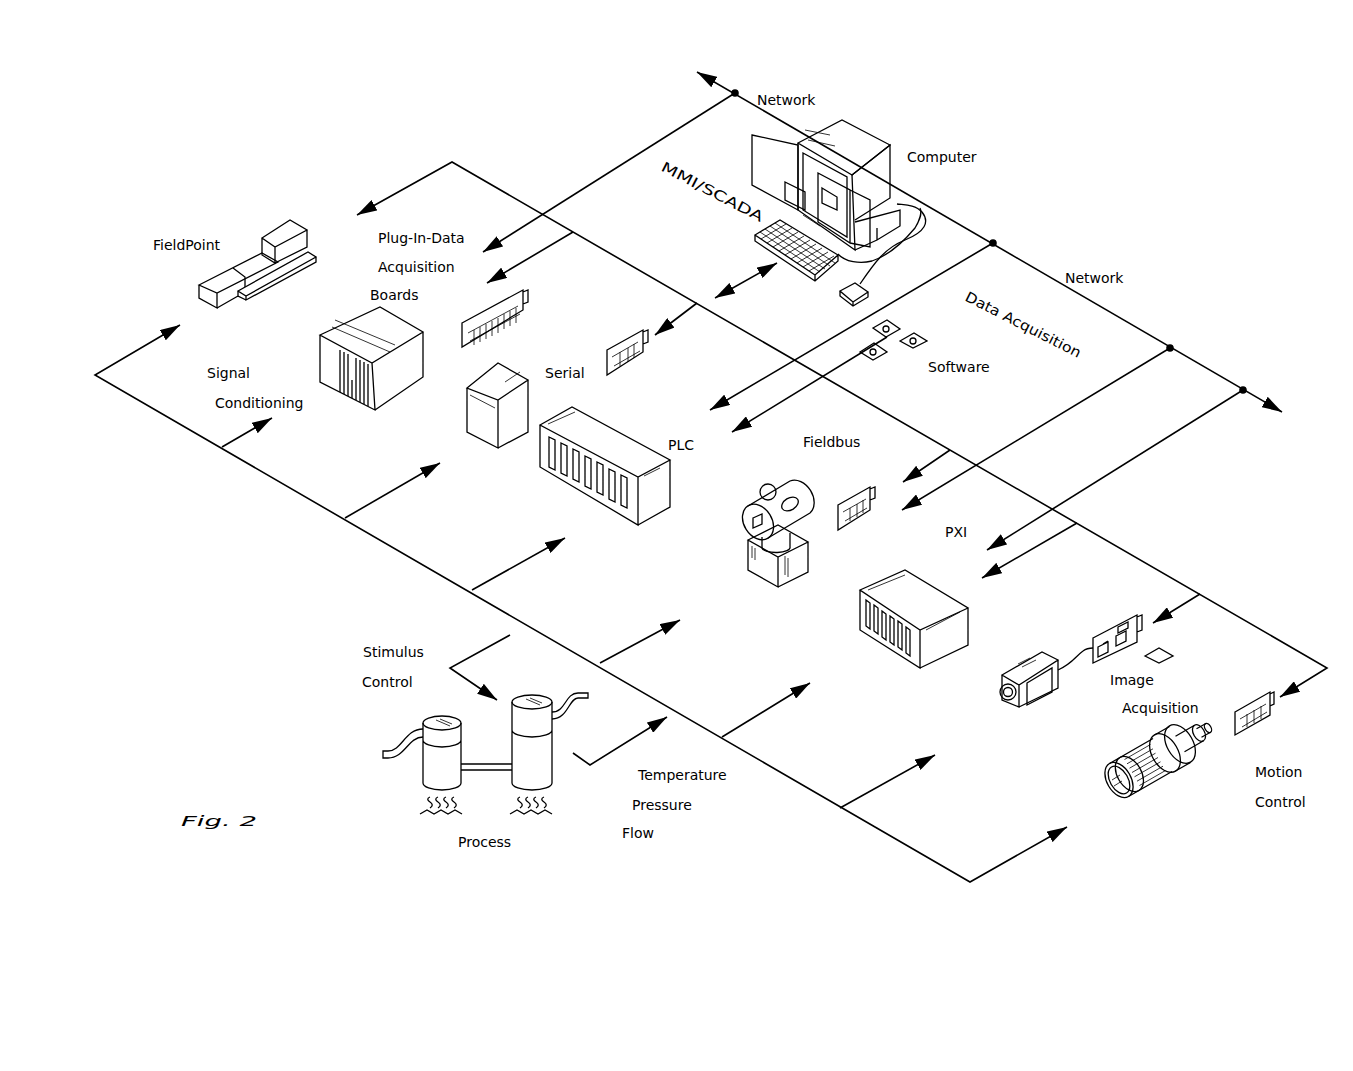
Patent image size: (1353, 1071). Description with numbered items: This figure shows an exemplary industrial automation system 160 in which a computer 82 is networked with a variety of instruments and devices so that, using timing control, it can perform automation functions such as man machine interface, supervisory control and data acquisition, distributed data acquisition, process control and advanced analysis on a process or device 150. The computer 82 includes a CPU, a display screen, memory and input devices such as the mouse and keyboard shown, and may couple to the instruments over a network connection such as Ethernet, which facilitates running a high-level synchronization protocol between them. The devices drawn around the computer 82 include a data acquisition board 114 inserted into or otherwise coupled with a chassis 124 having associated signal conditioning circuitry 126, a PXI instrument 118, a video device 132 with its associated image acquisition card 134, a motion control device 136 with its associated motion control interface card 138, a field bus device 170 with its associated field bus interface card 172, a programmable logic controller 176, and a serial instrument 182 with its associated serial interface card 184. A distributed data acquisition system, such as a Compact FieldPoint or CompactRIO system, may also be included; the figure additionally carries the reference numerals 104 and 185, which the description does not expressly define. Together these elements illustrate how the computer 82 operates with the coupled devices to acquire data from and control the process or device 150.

The industrial automation system 160 is at (1115, 131).
The computer 82 is at (862, 137).
The software 104 is at (892, 340).
The data acquisition board 114 is at (529, 289).
The serial interface card 184 is at (620, 343).
The FieldPoint distributed I/O system 185 is at (270, 228).
The chassis 124 is at (356, 366).
The signal conditioning circuitry 126 is at (345, 392).
The serial instrument 182 is at (473, 423).
The PLC (Programmable Logic Controller) 176 is at (620, 437).
The field bus device 170 is at (750, 565).
The field bus interface card 172 is at (853, 488).
The PXI instrument 118 is at (915, 583).
The video device 132 is at (1005, 698).
The image acquisition card 134 is at (1110, 625).
The motion control device 136 is at (1147, 787).
The motion control interface card 138 is at (1265, 723).
The process or device 150 is at (397, 747).